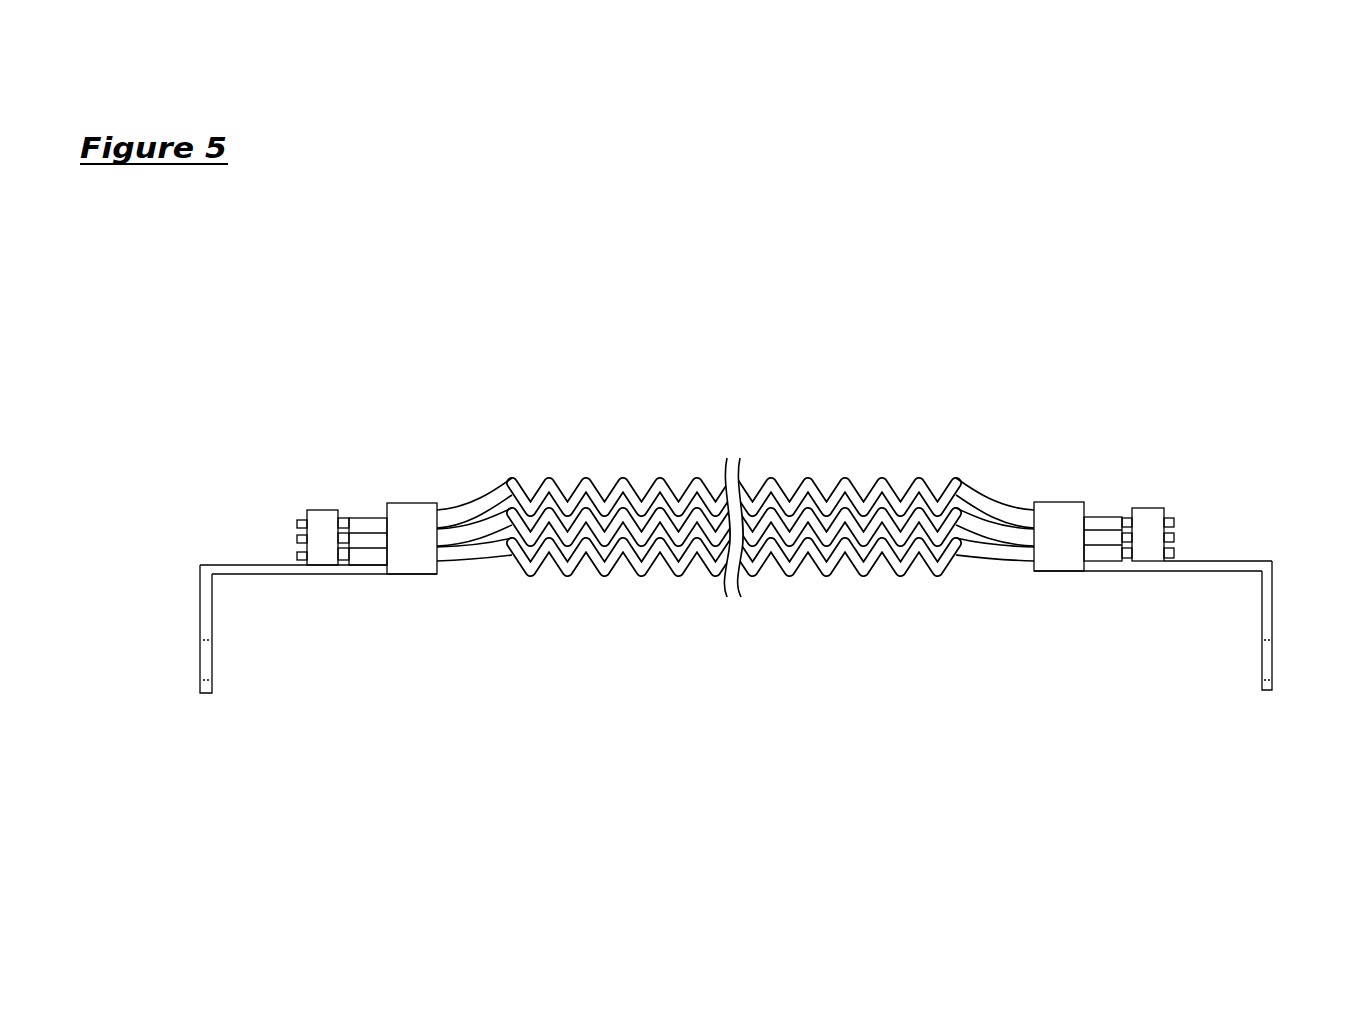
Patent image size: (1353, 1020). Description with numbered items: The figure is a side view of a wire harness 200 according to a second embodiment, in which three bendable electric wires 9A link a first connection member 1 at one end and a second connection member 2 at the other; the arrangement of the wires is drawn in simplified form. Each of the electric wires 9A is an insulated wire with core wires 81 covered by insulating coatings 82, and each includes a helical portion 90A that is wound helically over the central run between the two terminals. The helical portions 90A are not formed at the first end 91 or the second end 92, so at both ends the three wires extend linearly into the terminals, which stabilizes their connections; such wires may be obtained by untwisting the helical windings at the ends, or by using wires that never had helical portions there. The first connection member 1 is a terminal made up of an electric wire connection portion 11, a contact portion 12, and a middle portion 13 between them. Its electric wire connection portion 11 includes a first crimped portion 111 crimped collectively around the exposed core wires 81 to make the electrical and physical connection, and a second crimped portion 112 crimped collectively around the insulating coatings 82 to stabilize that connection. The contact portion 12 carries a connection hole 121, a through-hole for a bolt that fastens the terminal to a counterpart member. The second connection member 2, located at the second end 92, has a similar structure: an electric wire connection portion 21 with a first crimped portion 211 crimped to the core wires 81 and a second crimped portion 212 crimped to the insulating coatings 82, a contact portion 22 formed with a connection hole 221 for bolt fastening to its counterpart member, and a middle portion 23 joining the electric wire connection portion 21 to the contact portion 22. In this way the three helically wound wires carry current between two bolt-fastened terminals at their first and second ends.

The wire harness 200 is at (744, 475).
The first connection member 1 is at (1189, 590).
The second connection member 2 is at (291, 588).
The electric wire connection portion 11 is at (1104, 567).
The first crimped portion 111 is at (1143, 541).
The second crimped portion 112 is at (1060, 541).
The contact portion 12 is at (1294, 647).
The connection hole 121 is at (1273, 670).
The middle portion 13 is at (1252, 559).
The electric wire connection portion 21 is at (367, 598).
The first crimped portion 211 is at (325, 541).
The second crimped portion 212 is at (407, 545).
The contact portion 22 is at (178, 648).
The connection hole 221 is at (199, 672).
The middle portion 23 is at (249, 563).
The core wires 81 is at (1128, 518).
The insulating coatings 82 is at (1098, 518).
The electric wires 9A is at (742, 518).
The helical portion 90A is at (764, 449).
The first end 91 is at (1001, 492).
The second end 92 is at (473, 484).